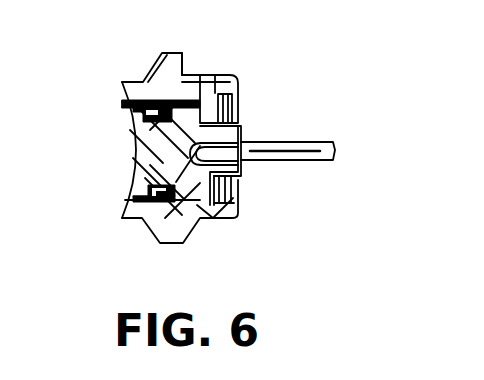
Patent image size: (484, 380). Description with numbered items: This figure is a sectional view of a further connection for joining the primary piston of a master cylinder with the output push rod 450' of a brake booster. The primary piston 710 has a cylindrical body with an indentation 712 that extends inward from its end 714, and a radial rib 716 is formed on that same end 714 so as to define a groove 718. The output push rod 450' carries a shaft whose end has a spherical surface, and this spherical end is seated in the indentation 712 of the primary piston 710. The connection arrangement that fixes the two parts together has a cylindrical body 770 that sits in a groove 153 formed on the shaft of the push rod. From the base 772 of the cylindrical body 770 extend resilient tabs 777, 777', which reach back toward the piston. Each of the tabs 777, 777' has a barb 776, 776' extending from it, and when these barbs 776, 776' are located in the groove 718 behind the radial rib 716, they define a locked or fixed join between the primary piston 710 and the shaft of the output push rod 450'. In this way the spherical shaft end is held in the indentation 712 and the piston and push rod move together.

The primary piston 710 is at (140, 152).
The indentation 712 is at (150, 145).
The end 714 is at (236, 194).
The radial rib 716 is at (217, 78).
The groove 718 is at (198, 78).
The cylindrical body 770 is at (240, 128).
The base 772 is at (240, 167).
The barb 776 is at (129, 98).
The barb 776' is at (236, 239).
The resilient tab 777 is at (272, 89).
The resilient tab 777' is at (224, 226).
The groove 153 is at (253, 141).
The output push rod 450' is at (377, 117).